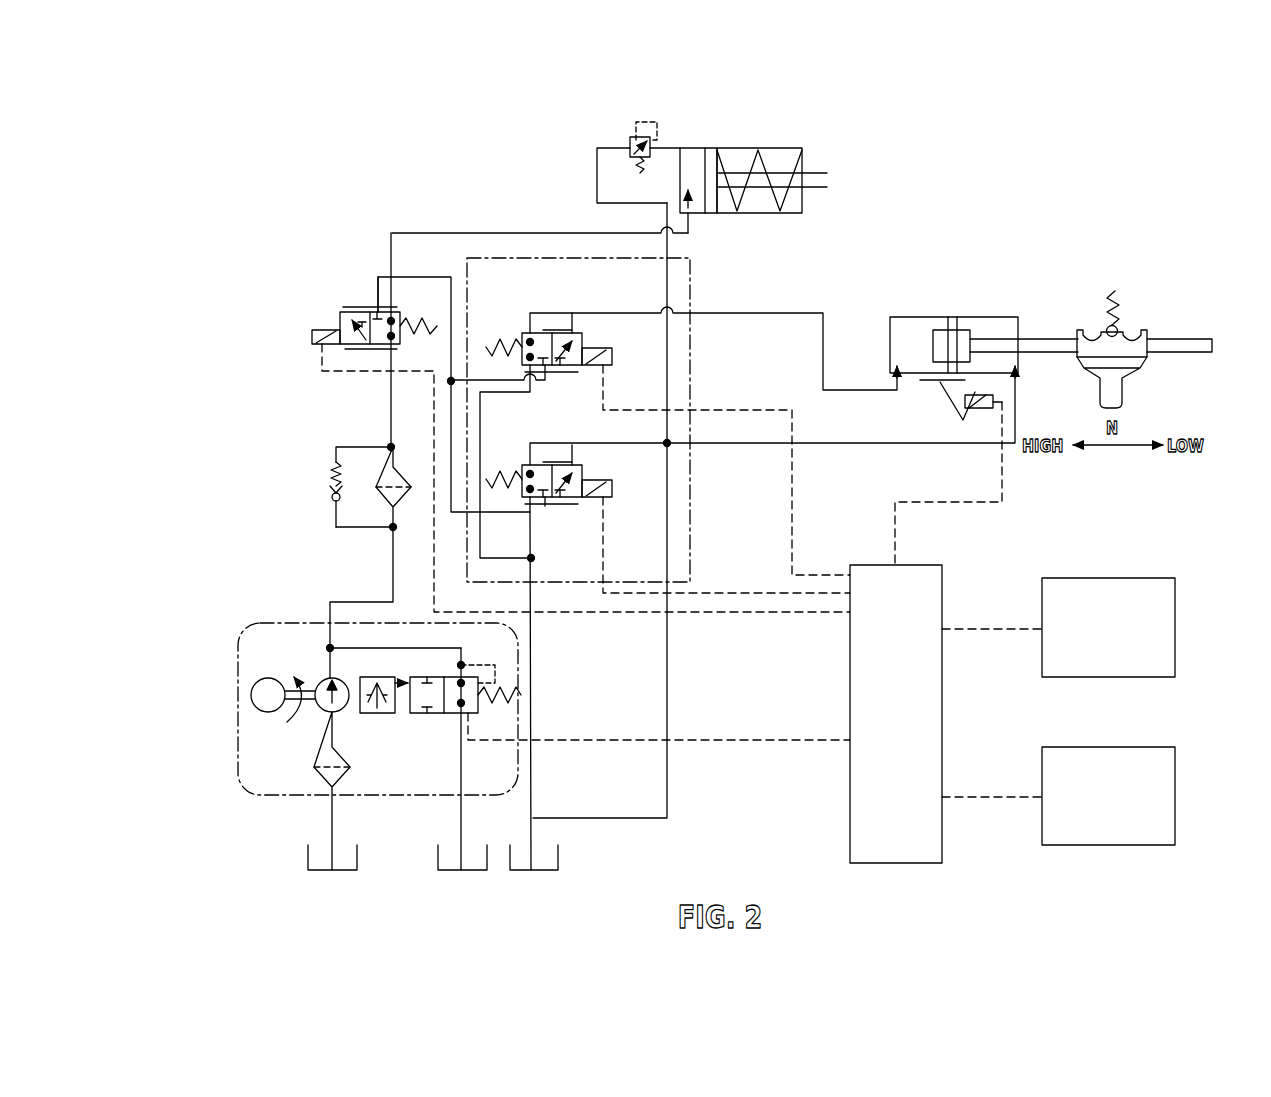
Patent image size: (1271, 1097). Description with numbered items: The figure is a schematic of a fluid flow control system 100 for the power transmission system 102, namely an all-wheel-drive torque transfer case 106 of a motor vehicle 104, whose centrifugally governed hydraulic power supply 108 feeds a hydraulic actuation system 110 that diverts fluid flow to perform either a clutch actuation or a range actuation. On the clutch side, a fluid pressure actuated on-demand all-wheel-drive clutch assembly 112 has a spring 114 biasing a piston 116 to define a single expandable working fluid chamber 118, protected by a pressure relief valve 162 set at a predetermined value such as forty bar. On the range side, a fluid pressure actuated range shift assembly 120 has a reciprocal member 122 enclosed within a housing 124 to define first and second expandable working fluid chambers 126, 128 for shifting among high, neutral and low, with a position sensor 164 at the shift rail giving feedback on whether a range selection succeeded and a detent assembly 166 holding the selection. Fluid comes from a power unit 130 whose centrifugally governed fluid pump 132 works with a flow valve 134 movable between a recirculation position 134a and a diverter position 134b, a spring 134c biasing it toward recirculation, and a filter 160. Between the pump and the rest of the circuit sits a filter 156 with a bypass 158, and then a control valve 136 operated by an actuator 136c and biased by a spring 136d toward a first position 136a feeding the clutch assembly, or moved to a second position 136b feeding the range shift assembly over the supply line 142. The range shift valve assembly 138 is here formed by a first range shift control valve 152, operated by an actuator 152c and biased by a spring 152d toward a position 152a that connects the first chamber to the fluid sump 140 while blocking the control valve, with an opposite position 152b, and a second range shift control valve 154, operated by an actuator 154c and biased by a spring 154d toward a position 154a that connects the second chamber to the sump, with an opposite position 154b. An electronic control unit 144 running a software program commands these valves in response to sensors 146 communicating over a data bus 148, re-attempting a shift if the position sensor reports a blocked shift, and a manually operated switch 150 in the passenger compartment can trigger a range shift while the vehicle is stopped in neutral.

The fluid flow control system 100 is at (337, 150).
The power transmission system 102 is at (238, 623).
The motor vehicle 104 is at (1010, 168).
The transfer case 106 is at (232, 652).
The centrifugally governed hydraulic power supply 108 is at (313, 672).
The hydraulic actuation system 110 is at (352, 230).
The on-demand all-wheel-drive clutch assembly 112 is at (801, 136).
The spring 114 is at (758, 165).
The piston 116 is at (694, 148).
The single expandable working fluid chamber 118 is at (703, 210).
The range shift assembly 120 is at (1068, 247).
The reciprocal member 122 is at (912, 332).
The housing 124 is at (950, 327).
The first expandable working fluid chamber 126 is at (988, 328).
The second expandable working fluid chamber 128 is at (895, 317).
The power unit 130 is at (238, 682).
The centrifugally governed fluid pump 132 is at (313, 716).
The flow valve 134 is at (430, 722).
The recirculation position 134a is at (455, 714).
The diverter position 134b is at (417, 713).
The spring 134c is at (502, 693).
The control valve 136 is at (310, 337).
The first position 136a is at (385, 349).
The second position 136b is at (346, 312).
The actuator 136c is at (322, 358).
The spring 136d is at (430, 312).
The range shift valve assembly 138 is at (692, 335).
The fluid sump 140 is at (308, 856).
The supply line 142 is at (452, 233).
The electronic control unit 144 is at (880, 730).
The sensors 146 is at (1092, 642).
The data bus 148 is at (986, 612).
The manually operated switch 150 is at (1092, 812).
The first range shift control valve 152 is at (576, 510).
The position 152a is at (545, 506).
The valve inlet 152b is at (566, 460).
The actuator 152c is at (612, 497).
The spring 152d is at (498, 480).
The second range shift control valve 154 is at (565, 378).
The position 154a is at (548, 330).
The valve port 154b is at (572, 330).
The actuator 154c is at (605, 366).
The spring 154d is at (490, 347).
The filter 156 is at (378, 535).
The bypass 158 is at (330, 484).
The filter 160 is at (315, 760).
The pressure relief valve 162 is at (630, 147).
The position sensor 164 is at (940, 392).
The detent assembly 166 is at (1135, 315).